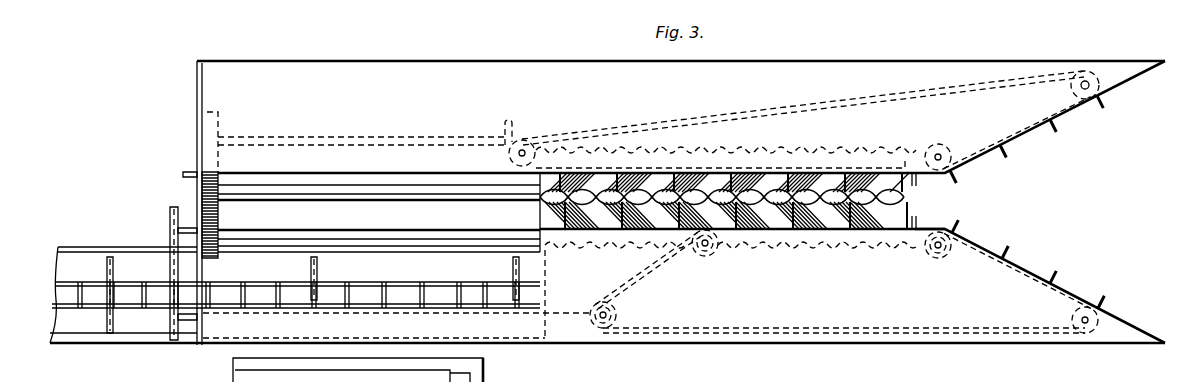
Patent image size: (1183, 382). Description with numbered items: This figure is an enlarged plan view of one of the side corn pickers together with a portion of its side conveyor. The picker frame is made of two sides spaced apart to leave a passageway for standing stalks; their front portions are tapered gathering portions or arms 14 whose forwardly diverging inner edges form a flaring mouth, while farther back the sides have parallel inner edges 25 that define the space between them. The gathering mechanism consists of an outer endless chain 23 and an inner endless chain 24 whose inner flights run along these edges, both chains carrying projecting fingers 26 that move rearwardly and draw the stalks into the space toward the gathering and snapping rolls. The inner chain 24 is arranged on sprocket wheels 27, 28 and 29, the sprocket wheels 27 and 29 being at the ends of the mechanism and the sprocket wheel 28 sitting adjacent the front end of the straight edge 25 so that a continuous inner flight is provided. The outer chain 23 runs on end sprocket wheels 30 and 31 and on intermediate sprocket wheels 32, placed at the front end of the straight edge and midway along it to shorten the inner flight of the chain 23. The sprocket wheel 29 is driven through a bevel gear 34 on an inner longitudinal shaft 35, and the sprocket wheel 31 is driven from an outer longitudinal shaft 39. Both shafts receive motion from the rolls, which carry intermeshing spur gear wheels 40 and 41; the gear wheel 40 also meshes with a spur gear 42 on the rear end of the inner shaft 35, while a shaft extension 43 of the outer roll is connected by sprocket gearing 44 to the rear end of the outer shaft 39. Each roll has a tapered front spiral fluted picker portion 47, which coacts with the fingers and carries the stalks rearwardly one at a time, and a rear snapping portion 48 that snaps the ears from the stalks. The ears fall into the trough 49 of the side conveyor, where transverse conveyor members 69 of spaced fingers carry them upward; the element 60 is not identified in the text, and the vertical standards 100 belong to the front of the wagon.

The tapered gathering portions or arms 14 is at (1035, 88).
The outer endless chain 23 is at (816, 330).
The inner endless chain 24 is at (833, 100).
The parallel inner edges 25 is at (938, 226).
The projecting fingers 26 is at (1055, 268).
The sprocket wheel 27 is at (1098, 75).
The sprocket wheel 28 is at (950, 150).
The sprocket wheel 29 is at (533, 143).
The end sprocket wheel 30 is at (1072, 318).
The end sprocket wheel 31 is at (617, 316).
The intermediate sprocket wheels 32 is at (713, 254).
The bevel gear 34 is at (512, 120).
The inner longitudinal shaft 35 is at (375, 141).
The outer longitudinal shaft 39 is at (555, 313).
The spur gear wheel 40 is at (218, 176).
The spur gear wheel 41 is at (218, 224).
The spur gear 42 is at (215, 118).
The shaft extension 43 is at (185, 222).
The sprocket gearing 44 is at (170, 232).
The front spiral fluted picker portions 47 is at (870, 172).
The rear snapping portions 48 is at (428, 185).
The trough 49 is at (142, 328).
The frame 60 is at (70, 282).
The conveyor members 69 is at (318, 265).
The vertical standards 100 is at (485, 370).